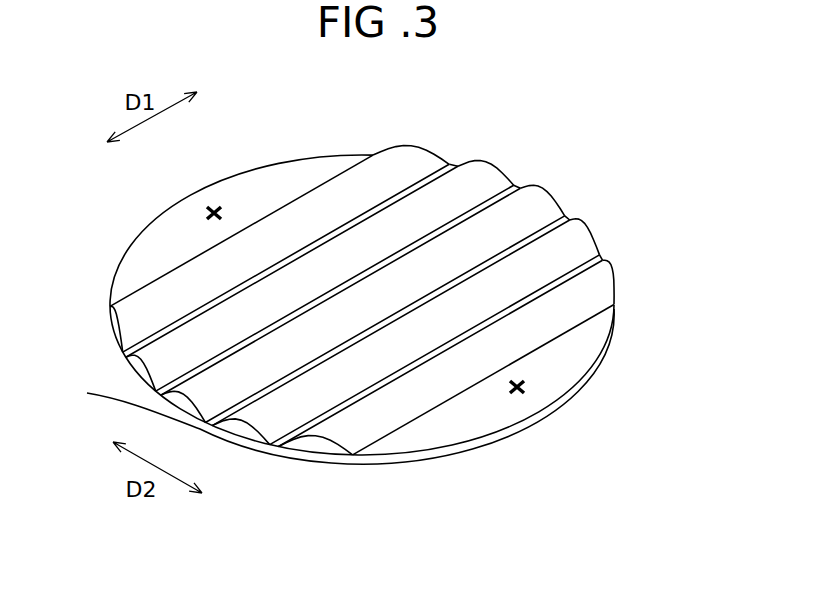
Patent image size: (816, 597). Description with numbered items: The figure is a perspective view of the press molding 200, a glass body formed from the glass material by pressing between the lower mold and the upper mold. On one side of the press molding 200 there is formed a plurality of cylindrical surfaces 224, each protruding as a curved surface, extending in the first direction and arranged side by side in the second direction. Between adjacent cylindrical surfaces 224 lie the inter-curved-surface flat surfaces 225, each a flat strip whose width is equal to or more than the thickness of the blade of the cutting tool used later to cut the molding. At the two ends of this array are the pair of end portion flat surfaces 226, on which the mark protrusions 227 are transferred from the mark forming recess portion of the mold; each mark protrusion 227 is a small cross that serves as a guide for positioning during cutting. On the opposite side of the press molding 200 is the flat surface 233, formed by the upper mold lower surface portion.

The press molding 200 is at (362, 299).
The cylindrical surfaces 224 is at (540, 195).
The inter-curved-surface flat surfaces 225 is at (123, 352).
The end portion flat surfaces 226 is at (282, 178).
The mark protrusion 227 is at (214, 205).
The flat surface 233 is at (258, 457).